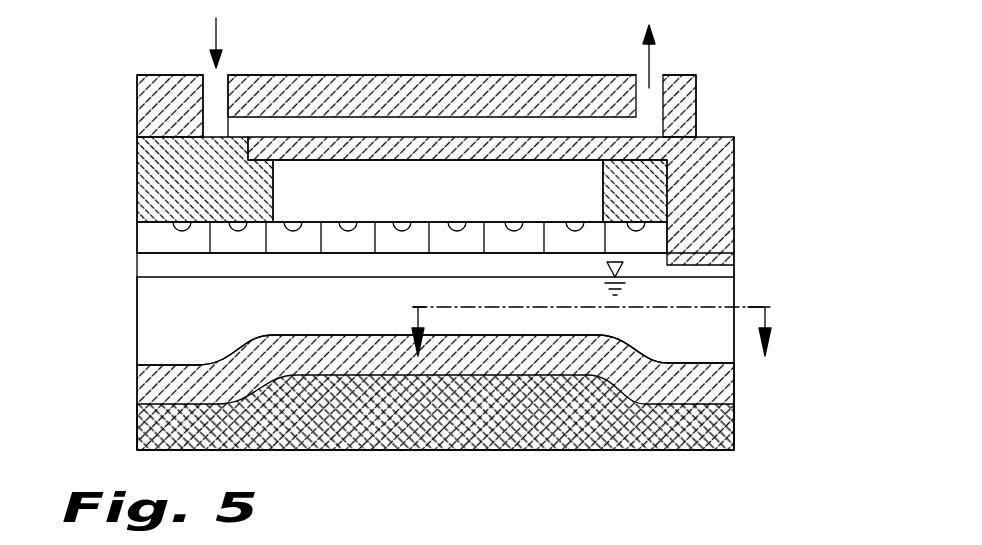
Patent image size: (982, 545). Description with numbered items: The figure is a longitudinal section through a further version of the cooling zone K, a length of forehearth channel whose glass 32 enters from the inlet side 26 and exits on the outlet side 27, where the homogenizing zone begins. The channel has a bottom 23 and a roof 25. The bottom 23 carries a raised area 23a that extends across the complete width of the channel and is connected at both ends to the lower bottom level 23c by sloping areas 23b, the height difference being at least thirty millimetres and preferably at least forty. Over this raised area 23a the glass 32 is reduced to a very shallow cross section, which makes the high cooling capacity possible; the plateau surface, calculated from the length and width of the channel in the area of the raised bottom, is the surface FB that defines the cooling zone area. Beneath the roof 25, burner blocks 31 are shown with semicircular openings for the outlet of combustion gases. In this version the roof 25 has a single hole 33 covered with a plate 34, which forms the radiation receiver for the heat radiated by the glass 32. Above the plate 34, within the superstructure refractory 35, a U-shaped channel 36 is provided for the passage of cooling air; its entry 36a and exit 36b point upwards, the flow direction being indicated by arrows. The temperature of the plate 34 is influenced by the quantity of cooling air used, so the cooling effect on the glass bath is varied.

The bottom 23 is at (720, 428).
The raised area 23a is at (320, 326).
The sloping areas 23b is at (236, 342).
The lower bottom level 23c is at (180, 348).
The roof 25 is at (152, 184).
The inlet side 26 is at (125, 322).
The outlet side 27 is at (745, 283).
The burner blocks 31 is at (152, 240).
The glass 32 is at (150, 299).
The hole 33 is at (458, 206).
The plate 34 is at (510, 143).
The superstructure refractory 35 is at (150, 108).
The U-shaped channel 36 is at (366, 125).
The entry 36a is at (216, 106).
The exit 36b is at (650, 114).
The surface of the raised bank FB is at (358, 332).
The cooling zone K is at (782, 124).